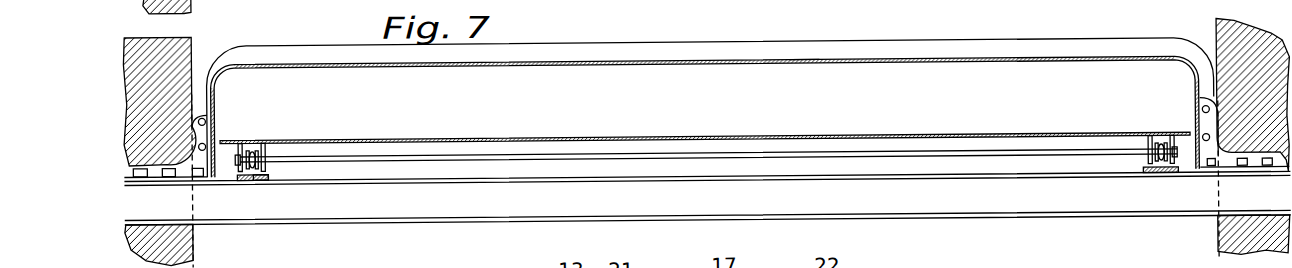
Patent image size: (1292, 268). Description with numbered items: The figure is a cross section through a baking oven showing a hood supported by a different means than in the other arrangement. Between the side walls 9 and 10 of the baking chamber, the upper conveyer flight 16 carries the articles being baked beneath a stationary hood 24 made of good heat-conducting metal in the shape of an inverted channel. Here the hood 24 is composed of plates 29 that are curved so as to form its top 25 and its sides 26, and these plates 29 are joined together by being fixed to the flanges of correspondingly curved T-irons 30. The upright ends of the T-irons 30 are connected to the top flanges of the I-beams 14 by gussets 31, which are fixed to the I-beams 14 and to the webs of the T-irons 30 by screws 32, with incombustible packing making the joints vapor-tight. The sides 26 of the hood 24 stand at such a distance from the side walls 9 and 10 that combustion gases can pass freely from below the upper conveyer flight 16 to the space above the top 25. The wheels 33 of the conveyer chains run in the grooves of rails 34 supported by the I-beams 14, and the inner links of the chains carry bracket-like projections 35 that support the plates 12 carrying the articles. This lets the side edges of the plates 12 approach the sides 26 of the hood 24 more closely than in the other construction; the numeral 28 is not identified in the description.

The side wall 9 is at (177, 55).
The side wall 10 is at (1245, 67).
The plates 12 is at (634, 137).
The I-beams 14 is at (372, 221).
The upper conveyer flight 16 is at (549, 139).
The hood 24 is at (695, 101).
The top of the hood 25 is at (548, 65).
The sides of the hood 26 is at (215, 92).
The upper member 28 is at (710, 9).
The plates 29 is at (803, 63).
The T-irons 30 is at (887, 44).
The gussets 31 is at (182, 168).
The screws 32 is at (167, 164).
The wheels 33 is at (261, 178).
The rails 34 is at (242, 178).
The bracket-like projections 35 is at (263, 142).